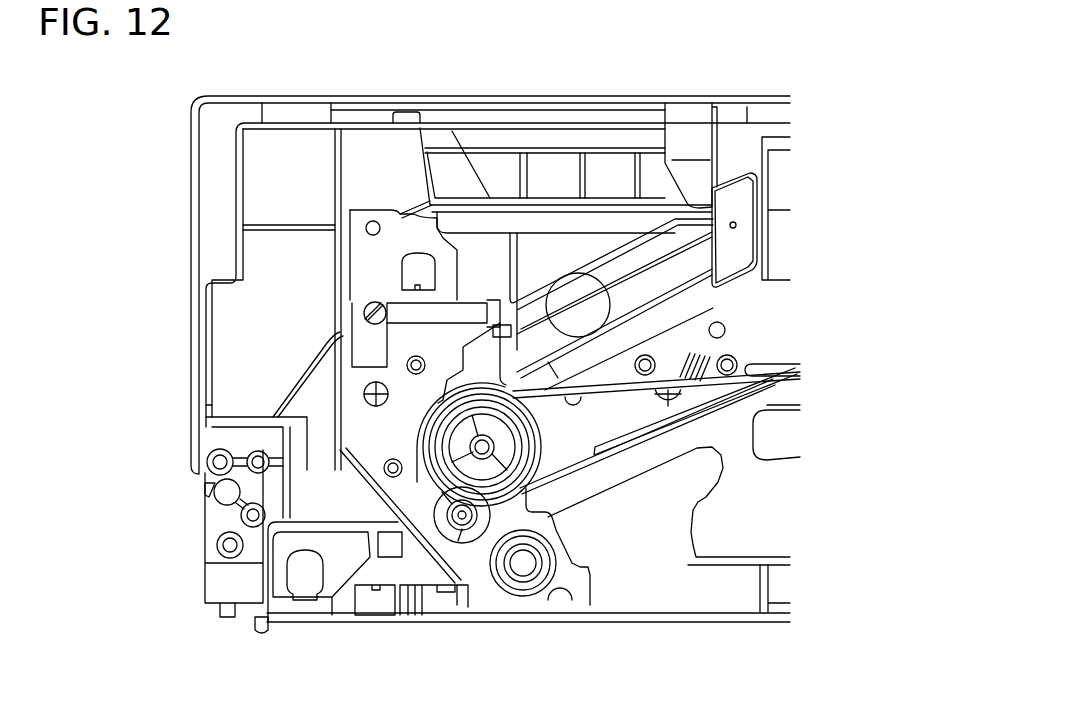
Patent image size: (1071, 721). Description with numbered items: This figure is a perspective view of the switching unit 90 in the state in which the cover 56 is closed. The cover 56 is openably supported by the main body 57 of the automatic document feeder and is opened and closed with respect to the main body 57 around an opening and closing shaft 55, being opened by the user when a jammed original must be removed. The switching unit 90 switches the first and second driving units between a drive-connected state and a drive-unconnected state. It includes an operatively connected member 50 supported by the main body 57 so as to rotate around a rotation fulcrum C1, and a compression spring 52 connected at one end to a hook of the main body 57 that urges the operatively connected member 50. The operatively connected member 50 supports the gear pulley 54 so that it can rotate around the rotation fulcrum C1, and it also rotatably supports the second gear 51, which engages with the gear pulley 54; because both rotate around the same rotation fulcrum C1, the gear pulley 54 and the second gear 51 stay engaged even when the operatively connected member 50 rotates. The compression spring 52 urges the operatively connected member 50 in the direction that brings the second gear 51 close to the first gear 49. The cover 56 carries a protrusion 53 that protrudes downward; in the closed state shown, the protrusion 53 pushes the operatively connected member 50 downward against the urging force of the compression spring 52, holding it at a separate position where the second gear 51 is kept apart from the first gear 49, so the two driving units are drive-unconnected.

The first gear 49 is at (528, 592).
The operatively connected member 50 is at (697, 264).
The second gear 51 is at (220, 541).
The compression spring 52 is at (400, 310).
The protrusion 53 is at (693, 178).
The gear pulley 54 is at (447, 440).
The opening and closing shaft 55 is at (217, 493).
The cover 56 is at (464, 97).
The main body 57 is at (327, 355).
The switching unit 90 is at (594, 244).
The rotation fulcrum C1 is at (482, 440).